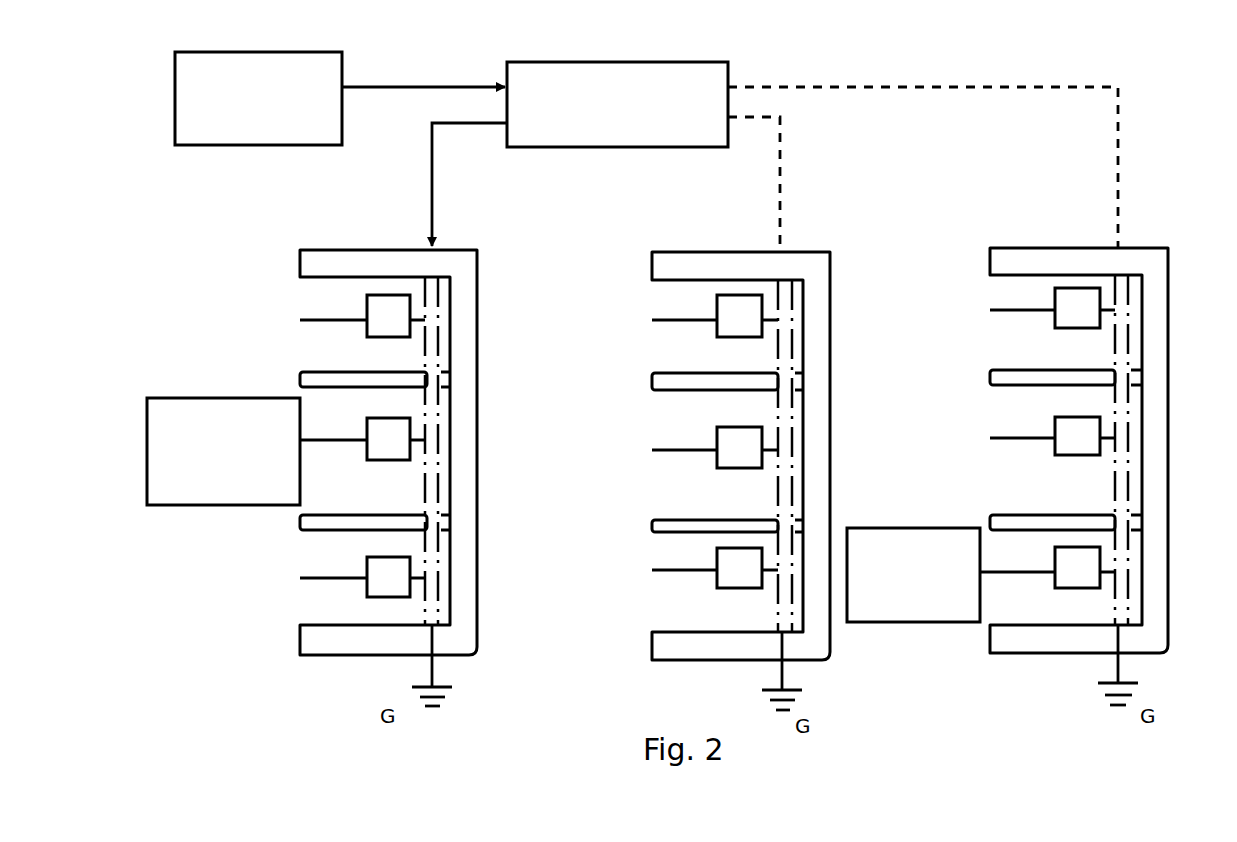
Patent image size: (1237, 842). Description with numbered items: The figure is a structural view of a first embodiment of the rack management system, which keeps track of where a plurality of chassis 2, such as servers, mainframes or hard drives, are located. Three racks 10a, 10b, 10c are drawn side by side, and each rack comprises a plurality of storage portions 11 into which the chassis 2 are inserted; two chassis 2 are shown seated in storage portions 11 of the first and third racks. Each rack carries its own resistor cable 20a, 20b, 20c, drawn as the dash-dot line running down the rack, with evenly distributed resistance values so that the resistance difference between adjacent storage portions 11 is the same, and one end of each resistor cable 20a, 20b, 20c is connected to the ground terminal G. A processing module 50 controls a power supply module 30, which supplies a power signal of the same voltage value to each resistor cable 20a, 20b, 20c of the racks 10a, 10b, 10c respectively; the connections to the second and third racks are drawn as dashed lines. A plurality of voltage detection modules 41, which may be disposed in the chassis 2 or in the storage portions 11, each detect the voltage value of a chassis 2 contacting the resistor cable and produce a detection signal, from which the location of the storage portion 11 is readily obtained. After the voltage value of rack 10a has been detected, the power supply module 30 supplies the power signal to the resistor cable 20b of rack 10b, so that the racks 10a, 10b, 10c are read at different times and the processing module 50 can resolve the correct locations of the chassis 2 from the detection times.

The processing module 50 is at (340, 98).
The power supply module 30 is at (775, 156).
The rack 10a is at (477, 243).
The rack 10b is at (831, 245).
The rack 10c is at (1169, 243).
The storage portion 11 is at (310, 396).
The chassis 2 is at (563, 510).
The voltage detection module 41 is at (392, 336).
The resistor cable 20a is at (448, 619).
The resistor cable 20b is at (800, 622).
The resistor cable 20c is at (1136, 617).